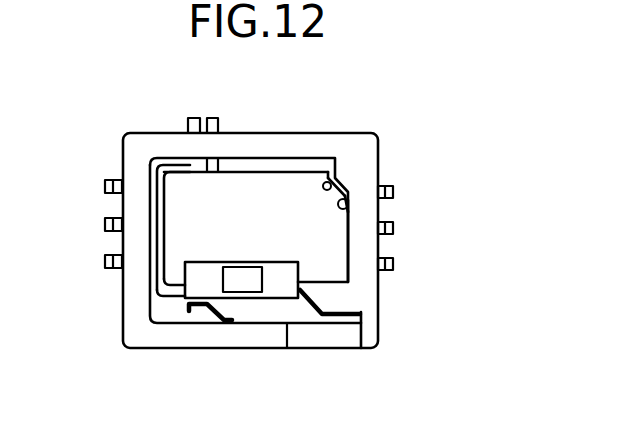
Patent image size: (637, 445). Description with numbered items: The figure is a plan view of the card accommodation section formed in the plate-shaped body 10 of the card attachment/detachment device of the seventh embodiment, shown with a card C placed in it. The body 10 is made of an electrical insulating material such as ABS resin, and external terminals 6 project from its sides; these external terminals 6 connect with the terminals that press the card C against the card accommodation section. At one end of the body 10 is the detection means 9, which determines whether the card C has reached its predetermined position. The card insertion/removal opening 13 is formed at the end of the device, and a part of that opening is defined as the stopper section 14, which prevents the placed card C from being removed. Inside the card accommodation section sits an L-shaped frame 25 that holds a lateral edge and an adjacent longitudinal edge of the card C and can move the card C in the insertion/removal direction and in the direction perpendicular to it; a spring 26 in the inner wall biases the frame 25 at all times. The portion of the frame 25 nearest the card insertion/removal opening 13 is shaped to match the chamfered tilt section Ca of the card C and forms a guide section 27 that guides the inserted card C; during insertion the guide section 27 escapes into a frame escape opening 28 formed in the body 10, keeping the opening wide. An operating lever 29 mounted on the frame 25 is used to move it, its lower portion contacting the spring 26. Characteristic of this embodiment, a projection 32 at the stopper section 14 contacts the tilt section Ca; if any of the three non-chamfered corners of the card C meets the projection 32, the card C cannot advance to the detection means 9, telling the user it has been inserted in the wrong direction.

The external terminals 6 is at (105, 226).
The detection means 9 is at (213, 118).
The body 10 is at (376, 131).
The card insertion/removal opening 13 is at (368, 300).
The stopper section 14 is at (350, 212).
The frame 25 is at (166, 160).
The spring 26 is at (212, 318).
The guide section 27 is at (360, 326).
The frame escape opening 28 is at (352, 340).
The operating lever 29 is at (243, 288).
The projection 32 is at (328, 183).
The card C is at (264, 180).
The tilt section Ca is at (332, 160).